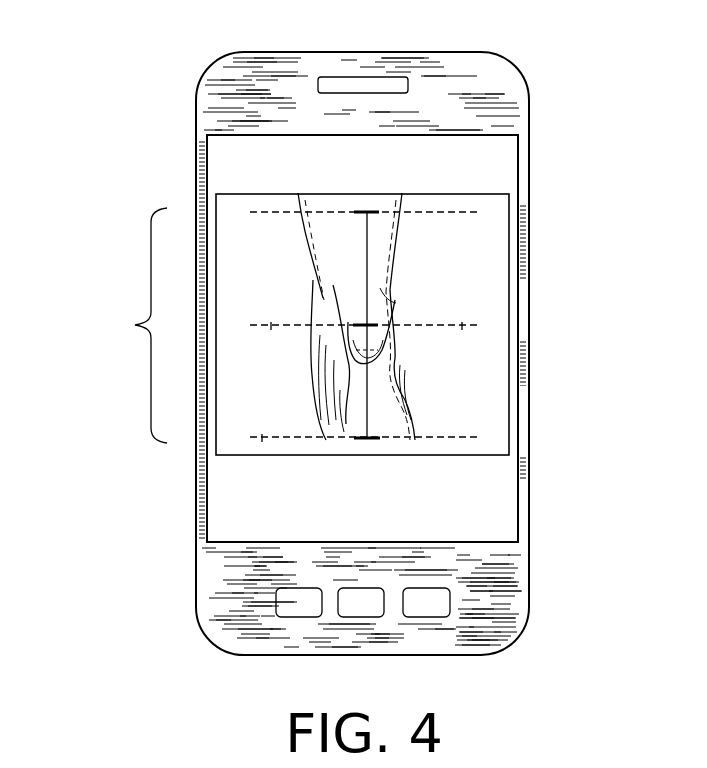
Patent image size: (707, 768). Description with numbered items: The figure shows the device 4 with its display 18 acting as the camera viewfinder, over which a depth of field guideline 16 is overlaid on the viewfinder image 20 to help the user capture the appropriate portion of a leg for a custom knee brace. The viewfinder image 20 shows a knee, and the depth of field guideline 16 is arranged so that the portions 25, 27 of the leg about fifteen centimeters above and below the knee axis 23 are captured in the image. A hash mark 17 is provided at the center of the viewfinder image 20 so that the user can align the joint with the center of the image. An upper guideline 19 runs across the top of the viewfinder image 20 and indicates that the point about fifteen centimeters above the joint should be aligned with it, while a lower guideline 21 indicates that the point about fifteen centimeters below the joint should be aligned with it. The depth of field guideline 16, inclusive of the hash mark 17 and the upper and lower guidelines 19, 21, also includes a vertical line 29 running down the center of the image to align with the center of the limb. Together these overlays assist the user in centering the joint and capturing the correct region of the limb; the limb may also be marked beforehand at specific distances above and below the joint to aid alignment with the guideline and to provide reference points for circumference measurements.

The device 4 is at (203, 81).
The depth of field guideline 16 is at (133, 325).
The hash mark 17 is at (462, 327).
The display 18 is at (505, 158).
The upper guideline 19 is at (455, 207).
The viewfinder image 20 is at (271, 327).
The lower guideline 21 is at (262, 440).
The knee axis 23 is at (377, 325).
The portion of the leg above the knee axis 25 is at (367, 247).
The portion of the leg below the knee axis 27 is at (376, 440).
The vertical line 29 is at (367, 247).